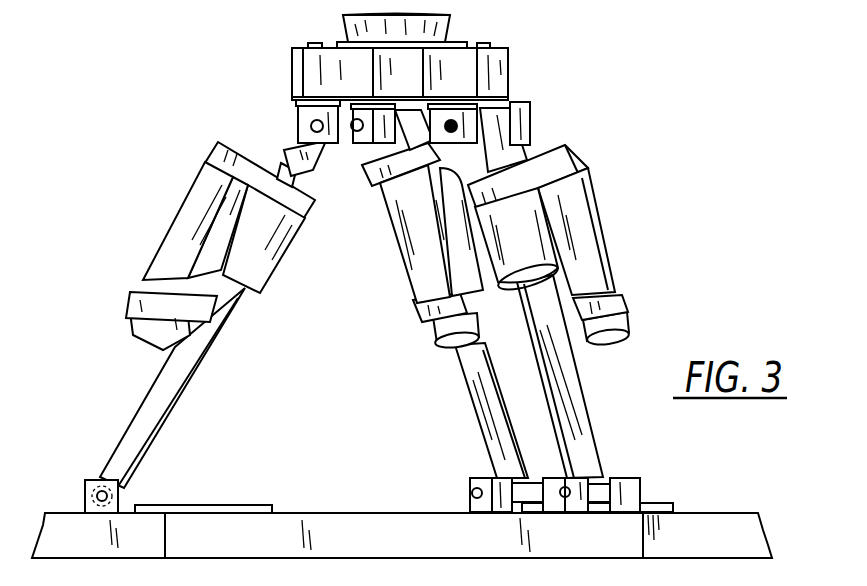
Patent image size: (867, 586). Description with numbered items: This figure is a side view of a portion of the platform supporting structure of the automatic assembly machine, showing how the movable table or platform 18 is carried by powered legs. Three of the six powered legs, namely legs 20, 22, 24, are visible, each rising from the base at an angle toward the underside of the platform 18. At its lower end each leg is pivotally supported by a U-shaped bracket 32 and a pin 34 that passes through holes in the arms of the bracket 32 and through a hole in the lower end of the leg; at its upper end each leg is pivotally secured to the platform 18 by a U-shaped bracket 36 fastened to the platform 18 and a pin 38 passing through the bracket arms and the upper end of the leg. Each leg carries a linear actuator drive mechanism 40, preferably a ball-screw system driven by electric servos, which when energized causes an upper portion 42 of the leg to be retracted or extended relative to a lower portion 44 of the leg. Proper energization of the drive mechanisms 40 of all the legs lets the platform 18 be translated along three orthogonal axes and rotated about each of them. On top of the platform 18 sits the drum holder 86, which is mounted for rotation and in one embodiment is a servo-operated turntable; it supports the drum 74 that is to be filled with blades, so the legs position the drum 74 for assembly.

The platform 18 is at (508, 75).
The powered leg 20 is at (604, 212).
The powered leg 22 is at (397, 243).
The powered leg 24 is at (210, 301).
The U-shaped bracket 32 is at (86, 488).
The pin 34 is at (110, 497).
The U-shaped bracket 36 is at (300, 112).
The pin 38 is at (357, 131).
The linear actuator drive mechanism 40 is at (190, 250).
The upper portion of the leg 42 is at (283, 160).
The lower portion of the leg 44 is at (180, 388).
The drum 74 is at (450, 24).
The drum holder 86 is at (337, 43).